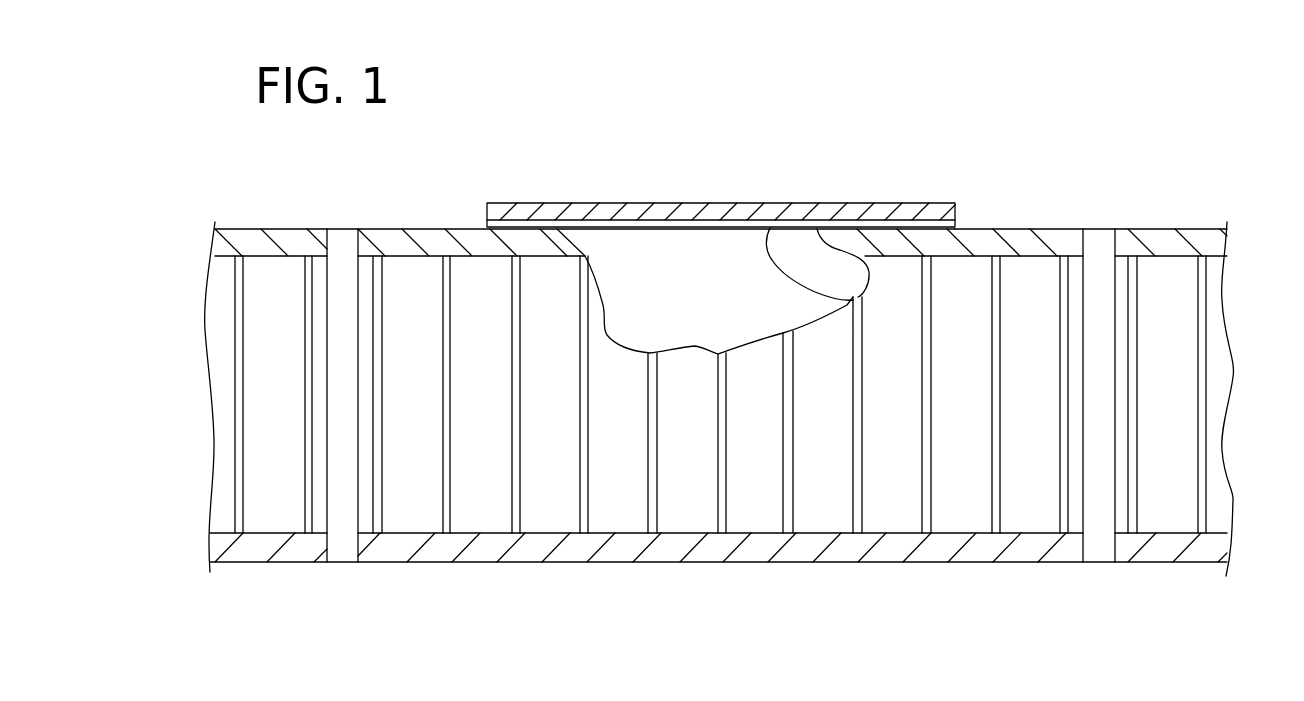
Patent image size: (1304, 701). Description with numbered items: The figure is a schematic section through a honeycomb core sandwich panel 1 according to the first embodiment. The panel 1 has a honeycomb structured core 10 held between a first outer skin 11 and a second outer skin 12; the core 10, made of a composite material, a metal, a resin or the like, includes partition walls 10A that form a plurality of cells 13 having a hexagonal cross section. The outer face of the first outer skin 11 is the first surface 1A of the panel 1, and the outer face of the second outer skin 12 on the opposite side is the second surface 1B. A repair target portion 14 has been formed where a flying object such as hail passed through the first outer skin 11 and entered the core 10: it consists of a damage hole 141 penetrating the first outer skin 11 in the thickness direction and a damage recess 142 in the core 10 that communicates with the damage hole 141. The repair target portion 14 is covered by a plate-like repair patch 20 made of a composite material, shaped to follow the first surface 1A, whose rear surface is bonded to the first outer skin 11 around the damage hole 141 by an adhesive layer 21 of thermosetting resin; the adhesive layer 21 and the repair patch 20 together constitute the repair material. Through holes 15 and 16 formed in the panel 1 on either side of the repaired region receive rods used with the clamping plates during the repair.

The honeycomb core sandwich panel 1 is at (1149, 134).
The core 10 is at (1243, 392).
The partition walls 10A is at (380, 517).
The first surface 1A is at (1030, 227).
The second surface 1B is at (1060, 565).
The first outer skin 11 is at (1147, 227).
The second outer skin 12 is at (1150, 565).
The cells 13 is at (478, 505).
The repair target portion 14 is at (860, 140).
The damage hole 141 is at (828, 230).
The damage recess 142 is at (777, 228).
The through hole 15 is at (325, 425).
The through hole 16 is at (1115, 425).
The repair patch 20 is at (608, 202).
The adhesive layer 21 is at (545, 224).